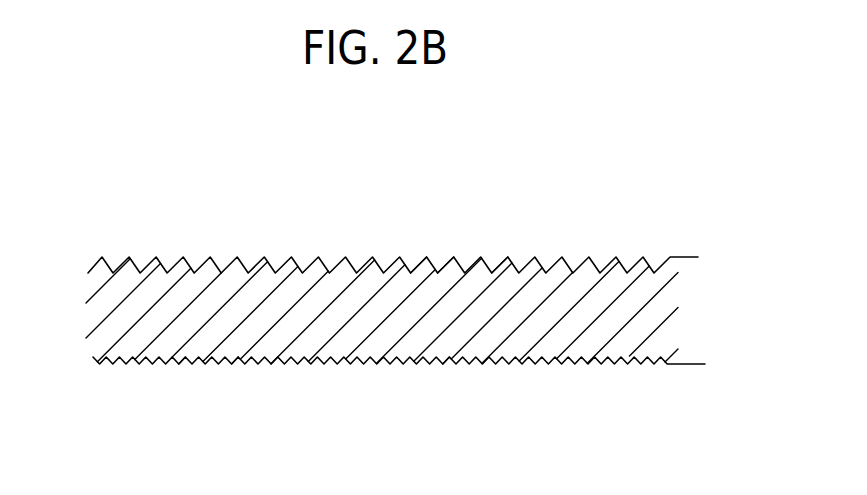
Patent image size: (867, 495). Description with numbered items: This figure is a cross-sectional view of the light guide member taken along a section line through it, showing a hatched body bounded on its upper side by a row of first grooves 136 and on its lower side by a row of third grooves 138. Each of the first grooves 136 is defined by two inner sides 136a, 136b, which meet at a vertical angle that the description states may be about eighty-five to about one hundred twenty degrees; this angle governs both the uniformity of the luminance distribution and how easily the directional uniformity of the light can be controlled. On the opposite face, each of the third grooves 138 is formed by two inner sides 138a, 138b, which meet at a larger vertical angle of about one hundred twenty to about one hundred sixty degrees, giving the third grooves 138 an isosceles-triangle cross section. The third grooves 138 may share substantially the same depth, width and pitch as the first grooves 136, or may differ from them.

The first grooves 136 is at (311, 257).
The inner side of first groove 136a is at (418, 263).
The inner side of first groove 136b is at (506, 263).
The third grooves 138 is at (352, 366).
The inner side of third groove 138a is at (186, 366).
The inner side of third groove 138b is at (236, 366).